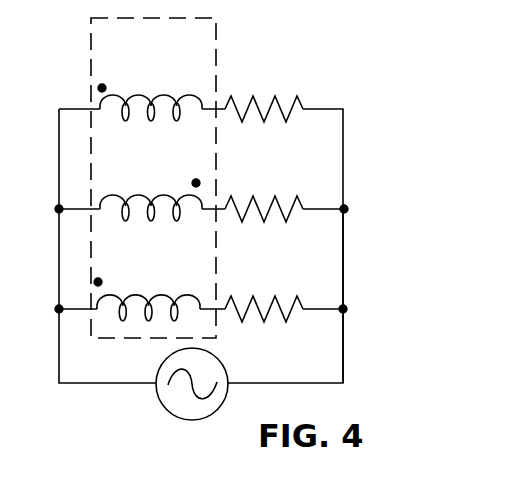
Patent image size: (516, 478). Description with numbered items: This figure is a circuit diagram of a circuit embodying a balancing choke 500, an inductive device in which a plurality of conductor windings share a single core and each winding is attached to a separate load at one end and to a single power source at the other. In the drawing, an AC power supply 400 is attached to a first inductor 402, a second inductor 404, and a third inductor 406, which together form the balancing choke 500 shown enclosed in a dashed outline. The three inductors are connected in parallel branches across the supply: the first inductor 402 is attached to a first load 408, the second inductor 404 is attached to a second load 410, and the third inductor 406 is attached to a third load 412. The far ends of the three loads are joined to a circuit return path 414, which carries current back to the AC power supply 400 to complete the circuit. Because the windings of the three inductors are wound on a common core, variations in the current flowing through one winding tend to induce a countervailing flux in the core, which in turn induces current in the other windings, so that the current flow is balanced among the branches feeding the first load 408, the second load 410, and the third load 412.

The AC power supply 400 is at (167, 397).
The first inductor 402 is at (157, 296).
The second inductor 404 is at (137, 197).
The third inductor 406 is at (143, 95).
The first load 408 is at (271, 294).
The second load 410 is at (290, 198).
The third load 412 is at (293, 98).
The circuit return path 414 is at (343, 348).
The balancing choke 500 is at (91, 44).